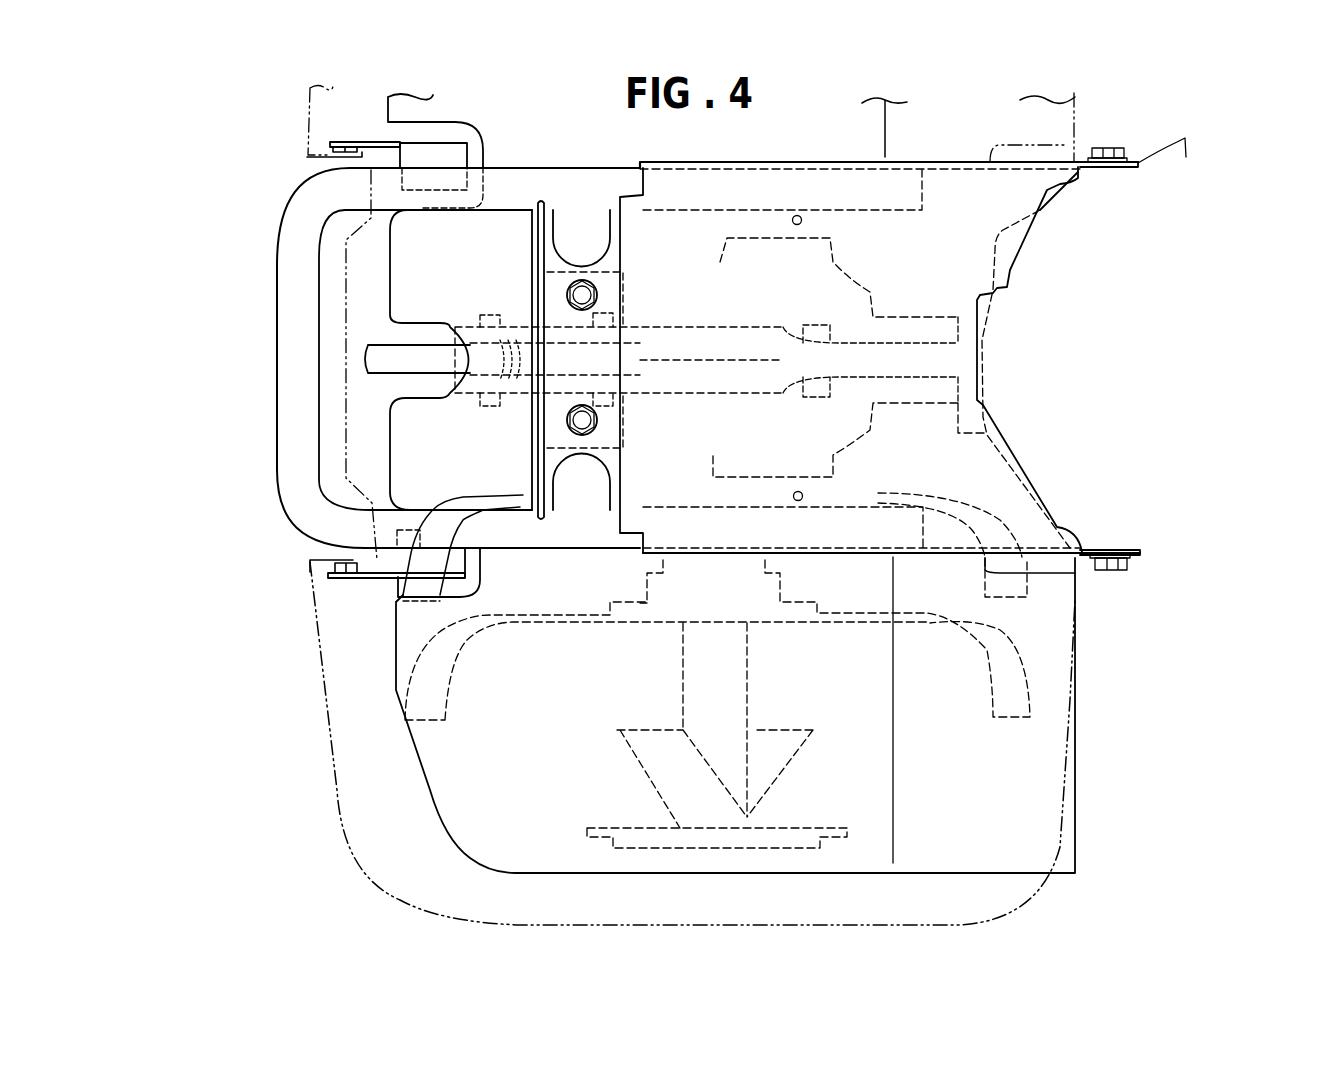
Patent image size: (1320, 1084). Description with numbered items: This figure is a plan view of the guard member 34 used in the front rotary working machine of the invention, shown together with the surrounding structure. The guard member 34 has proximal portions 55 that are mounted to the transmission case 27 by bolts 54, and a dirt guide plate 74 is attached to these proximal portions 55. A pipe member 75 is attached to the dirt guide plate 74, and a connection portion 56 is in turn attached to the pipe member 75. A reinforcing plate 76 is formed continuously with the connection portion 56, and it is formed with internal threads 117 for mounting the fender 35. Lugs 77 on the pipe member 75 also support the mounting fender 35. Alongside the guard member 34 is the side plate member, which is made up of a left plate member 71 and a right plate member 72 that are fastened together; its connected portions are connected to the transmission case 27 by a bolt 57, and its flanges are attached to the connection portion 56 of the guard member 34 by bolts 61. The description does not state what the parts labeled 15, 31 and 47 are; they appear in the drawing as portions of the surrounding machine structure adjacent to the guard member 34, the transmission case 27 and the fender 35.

The lower case 15 is at (633, 758).
The transmission case 27 is at (1160, 602).
The inner housing 31 is at (358, 308).
The guard member 34 is at (250, 378).
The fender 35 is at (317, 683).
The shaft 47 is at (368, 395).
The bolts 54 is at (1110, 148).
The proximal portions 55 is at (1095, 168).
The connection portion 56 is at (545, 458).
The bolt 57 is at (813, 322).
The bolts 61 is at (578, 293).
The left plate member 71 is at (755, 340).
The right plate member 72 is at (755, 340).
The dirt guide plate 74 is at (874, 750).
The pipe member 75 is at (717, 428).
The reinforcing plate 76 is at (573, 540).
The lugs 77 is at (368, 157).
The internal threads 117 is at (796, 214).